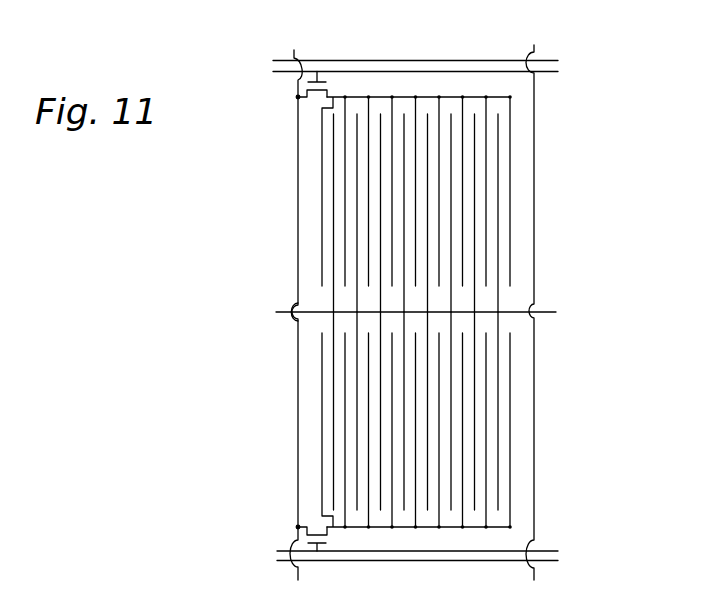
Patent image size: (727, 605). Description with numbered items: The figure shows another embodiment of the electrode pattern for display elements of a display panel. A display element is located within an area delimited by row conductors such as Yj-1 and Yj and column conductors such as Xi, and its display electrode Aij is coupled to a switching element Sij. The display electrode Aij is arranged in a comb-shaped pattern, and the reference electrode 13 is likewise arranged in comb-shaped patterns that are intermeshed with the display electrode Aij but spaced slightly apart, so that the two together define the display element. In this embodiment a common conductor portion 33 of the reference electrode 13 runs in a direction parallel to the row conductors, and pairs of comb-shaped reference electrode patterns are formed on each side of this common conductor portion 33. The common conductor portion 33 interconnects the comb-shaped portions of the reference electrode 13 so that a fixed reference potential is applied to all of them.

The reference electrode 13 is at (552, 311).
The common conductor portion 33 is at (294, 306).
The column conductor Xi is at (294, 58).
The row conductor Yj-1 is at (284, 60).
The row conductor Yj is at (281, 73).
The switching element Sij is at (338, 88).
The display electrode Aij is at (534, 204).